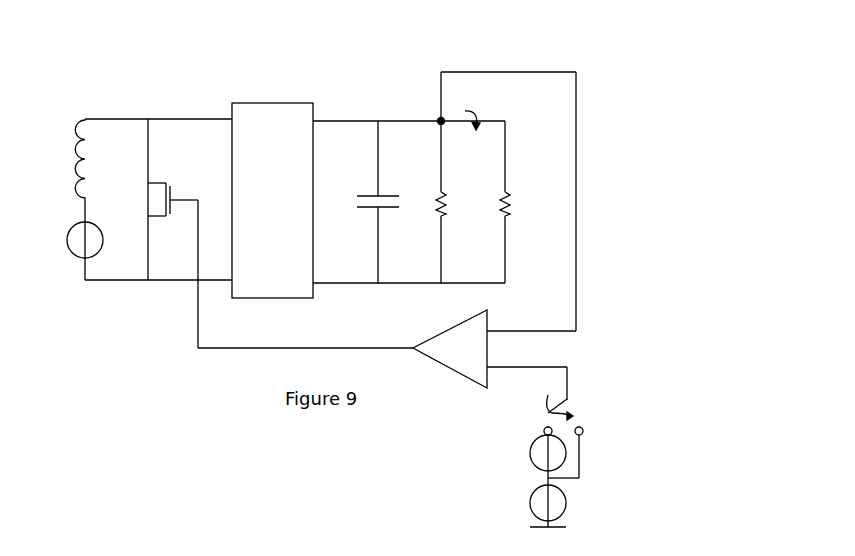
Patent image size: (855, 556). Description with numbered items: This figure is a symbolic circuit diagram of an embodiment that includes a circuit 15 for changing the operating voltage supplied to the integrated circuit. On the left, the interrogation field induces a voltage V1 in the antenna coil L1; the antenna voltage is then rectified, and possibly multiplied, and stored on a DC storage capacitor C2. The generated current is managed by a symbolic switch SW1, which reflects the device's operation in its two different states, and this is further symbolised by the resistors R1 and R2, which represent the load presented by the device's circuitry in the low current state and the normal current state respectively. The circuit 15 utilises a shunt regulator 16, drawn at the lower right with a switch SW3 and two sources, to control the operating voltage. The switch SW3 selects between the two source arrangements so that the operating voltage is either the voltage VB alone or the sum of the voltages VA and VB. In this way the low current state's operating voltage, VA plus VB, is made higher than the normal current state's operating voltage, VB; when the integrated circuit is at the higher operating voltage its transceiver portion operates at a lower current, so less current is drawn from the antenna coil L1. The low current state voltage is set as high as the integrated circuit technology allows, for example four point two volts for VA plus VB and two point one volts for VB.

The circuit 15 is at (617, 167).
The shunt regulator 16 is at (453, 457).
The antenna coil L1 is at (102, 170).
The voltage V1 is at (100, 251).
The DC storage capacitor C2 is at (394, 202).
The resistor R2 is at (456, 202).
The resistor R1 is at (521, 202).
The symbolic switch SW1 is at (465, 104).
The switch SW3 is at (581, 415).
The operating voltage VB is at (538, 460).
The voltage VA is at (532, 506).